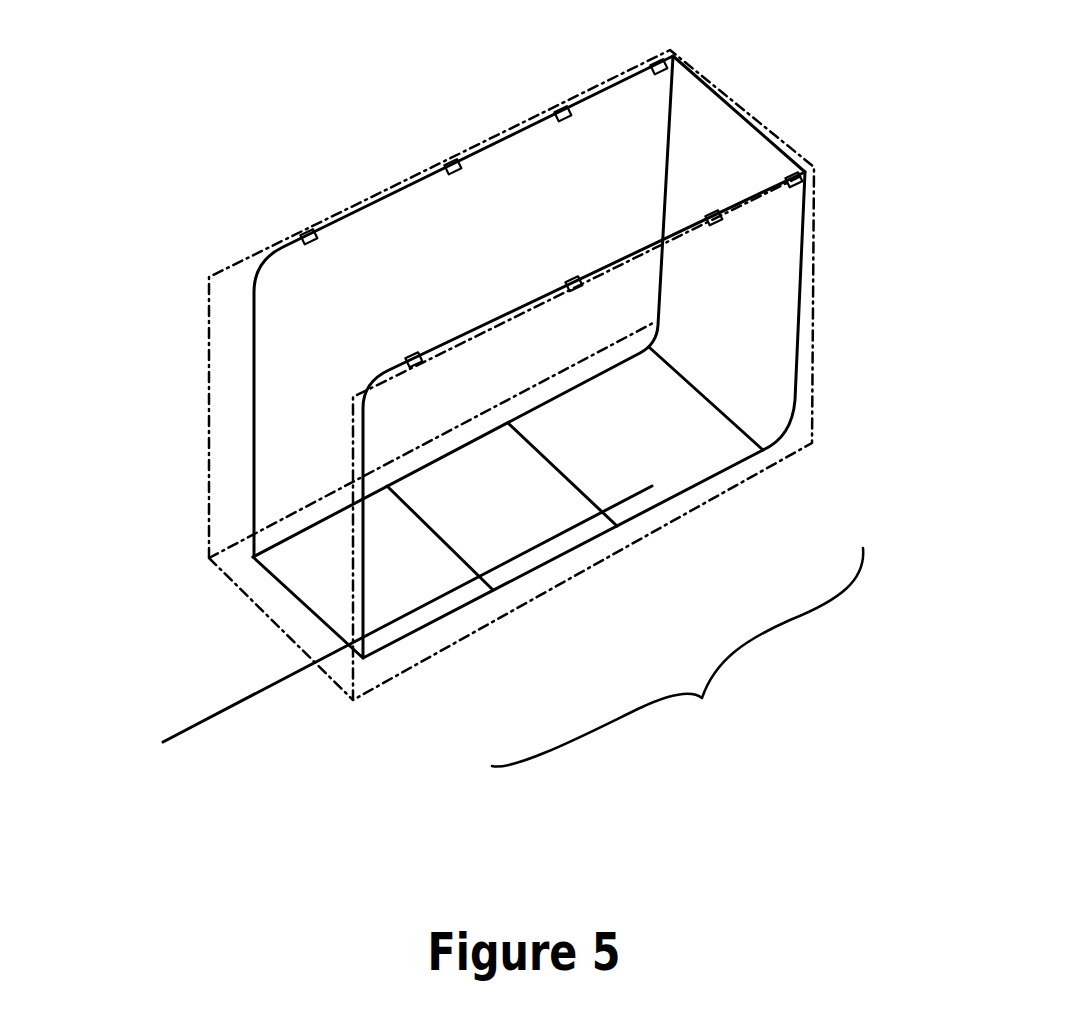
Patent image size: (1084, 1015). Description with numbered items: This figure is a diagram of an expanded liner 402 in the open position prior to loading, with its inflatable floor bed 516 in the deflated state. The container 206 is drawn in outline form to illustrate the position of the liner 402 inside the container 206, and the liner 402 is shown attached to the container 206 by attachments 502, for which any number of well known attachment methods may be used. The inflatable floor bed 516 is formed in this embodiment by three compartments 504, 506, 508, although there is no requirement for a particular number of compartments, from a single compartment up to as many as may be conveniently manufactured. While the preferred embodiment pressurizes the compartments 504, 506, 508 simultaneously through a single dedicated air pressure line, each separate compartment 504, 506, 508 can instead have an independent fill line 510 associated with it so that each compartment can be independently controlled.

The container 206 is at (818, 252).
The liner 402 is at (733, 105).
The attachments 502 is at (308, 230).
The compartment 504 is at (688, 465).
The compartment 506 is at (540, 558).
The compartment 508 is at (405, 627).
The fill line 510 is at (168, 738).
The inflatable floor bed 516 is at (677, 657).